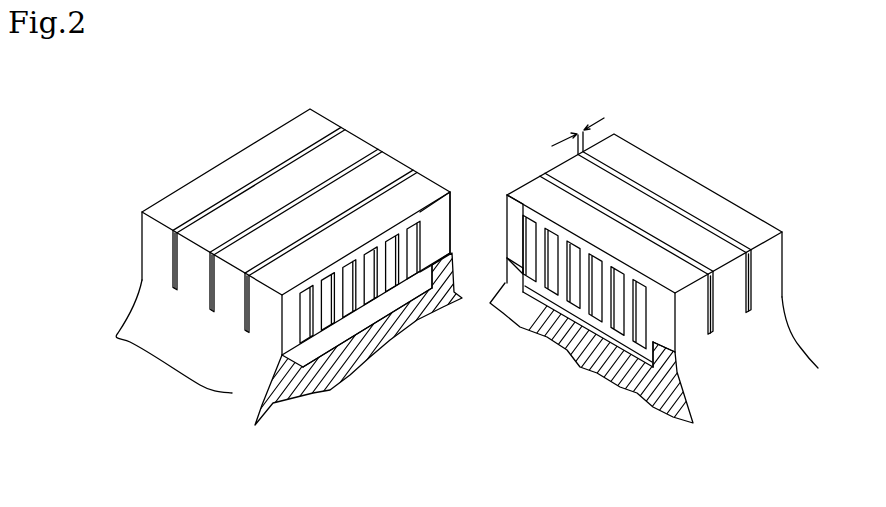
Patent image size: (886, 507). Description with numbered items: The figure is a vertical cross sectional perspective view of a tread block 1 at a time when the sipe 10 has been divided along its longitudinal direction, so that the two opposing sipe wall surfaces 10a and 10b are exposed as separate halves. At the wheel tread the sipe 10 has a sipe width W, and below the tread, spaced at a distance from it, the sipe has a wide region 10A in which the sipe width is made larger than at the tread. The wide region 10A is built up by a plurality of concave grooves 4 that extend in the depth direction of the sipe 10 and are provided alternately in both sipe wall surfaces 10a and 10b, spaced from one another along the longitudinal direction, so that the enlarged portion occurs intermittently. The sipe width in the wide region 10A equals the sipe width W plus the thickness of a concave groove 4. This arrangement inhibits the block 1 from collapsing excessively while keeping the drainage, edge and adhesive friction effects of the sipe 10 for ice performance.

The block 1 is at (230, 153).
The sipe 10 is at (302, 153).
The sipe wall surface 10a is at (437, 213).
The sipe wall surface 10b is at (512, 223).
The wide region 10A is at (290, 328).
The concave groove 4 is at (347, 315).
The sipe width W is at (578, 128).